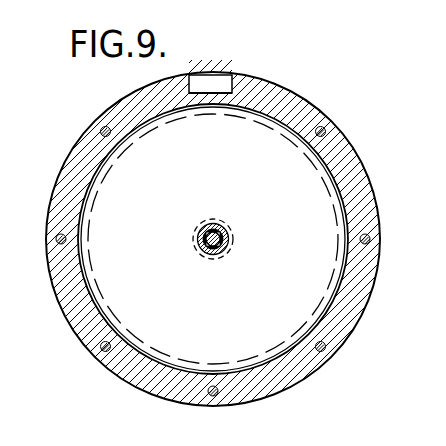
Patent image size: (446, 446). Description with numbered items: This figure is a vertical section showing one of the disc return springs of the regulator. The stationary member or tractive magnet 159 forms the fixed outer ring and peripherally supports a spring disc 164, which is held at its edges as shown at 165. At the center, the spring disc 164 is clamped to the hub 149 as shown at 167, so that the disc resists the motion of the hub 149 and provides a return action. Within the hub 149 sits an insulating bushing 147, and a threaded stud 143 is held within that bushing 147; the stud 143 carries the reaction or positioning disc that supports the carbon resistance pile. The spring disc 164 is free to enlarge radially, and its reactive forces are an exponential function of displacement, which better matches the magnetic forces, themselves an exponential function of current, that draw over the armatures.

The tractive magnet 159 is at (224, 102).
The spring disc 164 is at (110, 203).
The edge holding of spring disc 165 is at (132, 340).
The threaded stud 143 is at (204, 232).
The insulating bushing 147 is at (203, 241).
The hub 149 is at (218, 251).
The center clamping of spring disc 167 is at (222, 217).